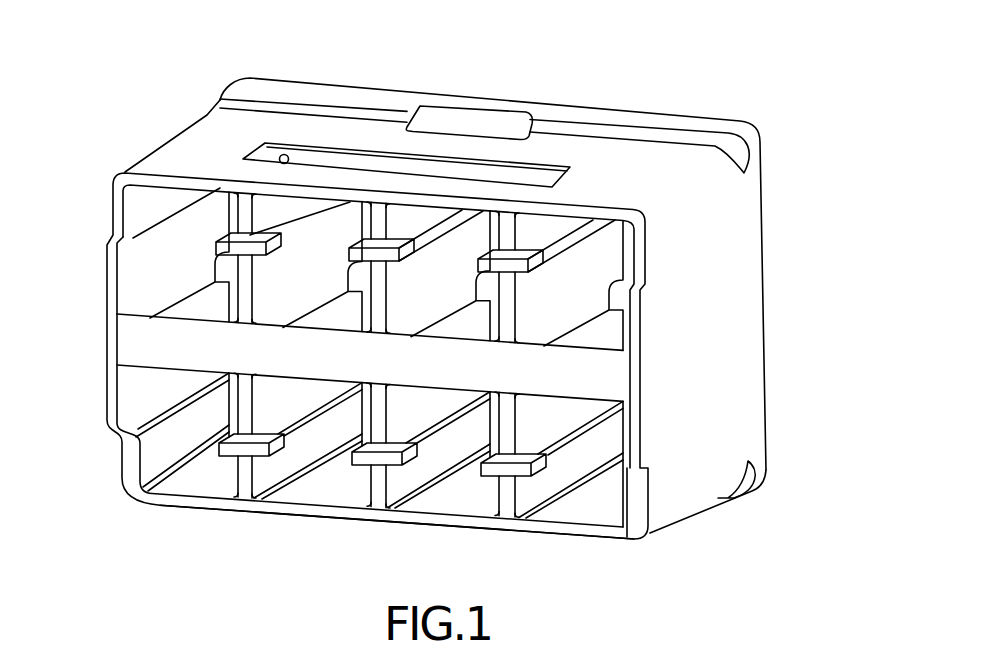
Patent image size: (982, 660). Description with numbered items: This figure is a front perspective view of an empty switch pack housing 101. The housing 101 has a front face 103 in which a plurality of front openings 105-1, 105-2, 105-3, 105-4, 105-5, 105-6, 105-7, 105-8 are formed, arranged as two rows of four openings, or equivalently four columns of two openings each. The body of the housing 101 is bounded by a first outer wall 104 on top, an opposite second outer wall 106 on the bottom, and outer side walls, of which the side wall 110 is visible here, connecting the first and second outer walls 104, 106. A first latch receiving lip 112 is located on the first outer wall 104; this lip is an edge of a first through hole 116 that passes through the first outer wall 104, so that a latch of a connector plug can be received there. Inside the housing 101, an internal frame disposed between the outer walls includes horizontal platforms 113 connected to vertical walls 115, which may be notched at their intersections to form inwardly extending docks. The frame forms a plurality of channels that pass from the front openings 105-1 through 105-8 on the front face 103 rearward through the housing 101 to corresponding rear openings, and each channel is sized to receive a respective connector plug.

The switch pack housing 101 is at (782, 100).
The front face 103 is at (369, 365).
The first outer wall 104 is at (250, 142).
The front opening 105-1 is at (170, 250).
The front opening 105-2 is at (206, 467).
The front opening 105-3 is at (318, 249).
The front opening 105-4 is at (328, 473).
The front opening 105-5 is at (481, 229).
The front opening 105-6 is at (467, 481).
The front opening 105-7 is at (606, 266).
The front opening 105-8 is at (607, 490).
The second outer wall 106 is at (660, 534).
The outer side wall 110 is at (713, 359).
The first latch receiving lip 112 is at (499, 119).
The horizontal platform 113 is at (470, 319).
The vertical wall 115 is at (437, 297).
The first through hole 116 is at (443, 119).